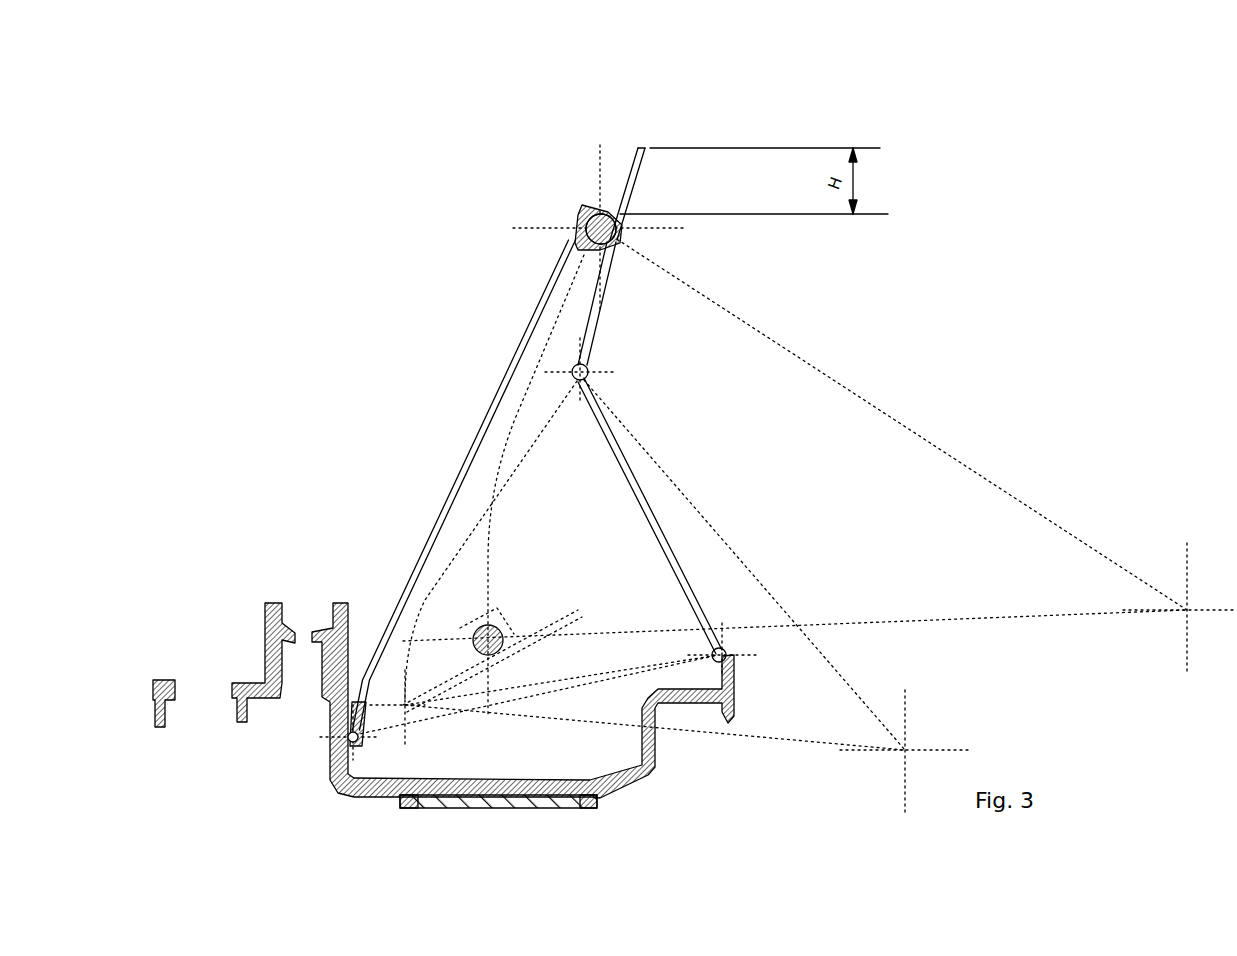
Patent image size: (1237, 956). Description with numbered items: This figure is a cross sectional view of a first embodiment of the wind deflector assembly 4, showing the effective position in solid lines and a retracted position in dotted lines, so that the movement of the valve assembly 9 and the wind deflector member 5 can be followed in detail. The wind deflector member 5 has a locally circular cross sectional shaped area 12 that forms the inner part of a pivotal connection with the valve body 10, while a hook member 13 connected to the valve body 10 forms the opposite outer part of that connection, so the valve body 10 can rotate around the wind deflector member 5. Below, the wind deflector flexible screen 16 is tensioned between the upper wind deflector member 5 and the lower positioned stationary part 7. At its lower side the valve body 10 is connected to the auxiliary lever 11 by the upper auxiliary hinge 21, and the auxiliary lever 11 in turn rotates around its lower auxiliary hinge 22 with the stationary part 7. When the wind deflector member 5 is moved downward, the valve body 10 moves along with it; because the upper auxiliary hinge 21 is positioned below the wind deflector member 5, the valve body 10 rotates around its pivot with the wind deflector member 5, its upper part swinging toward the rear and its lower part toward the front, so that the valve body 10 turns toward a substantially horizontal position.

The wind deflector assembly 4 is at (558, 200).
The wind deflector member 5 is at (617, 207).
The stationary part 7 is at (368, 795).
The valve assembly 9 is at (640, 307).
The valve body 10 is at (640, 184).
The auxiliary lever 11 is at (657, 527).
The locally circular cross sectional shaped area 12 is at (625, 224).
The hook member 13 is at (588, 190).
The wind deflector flexible screen 16 is at (478, 416).
The upper auxiliary hinge 21 is at (590, 364).
The lower auxiliary hinge 22 is at (730, 653).